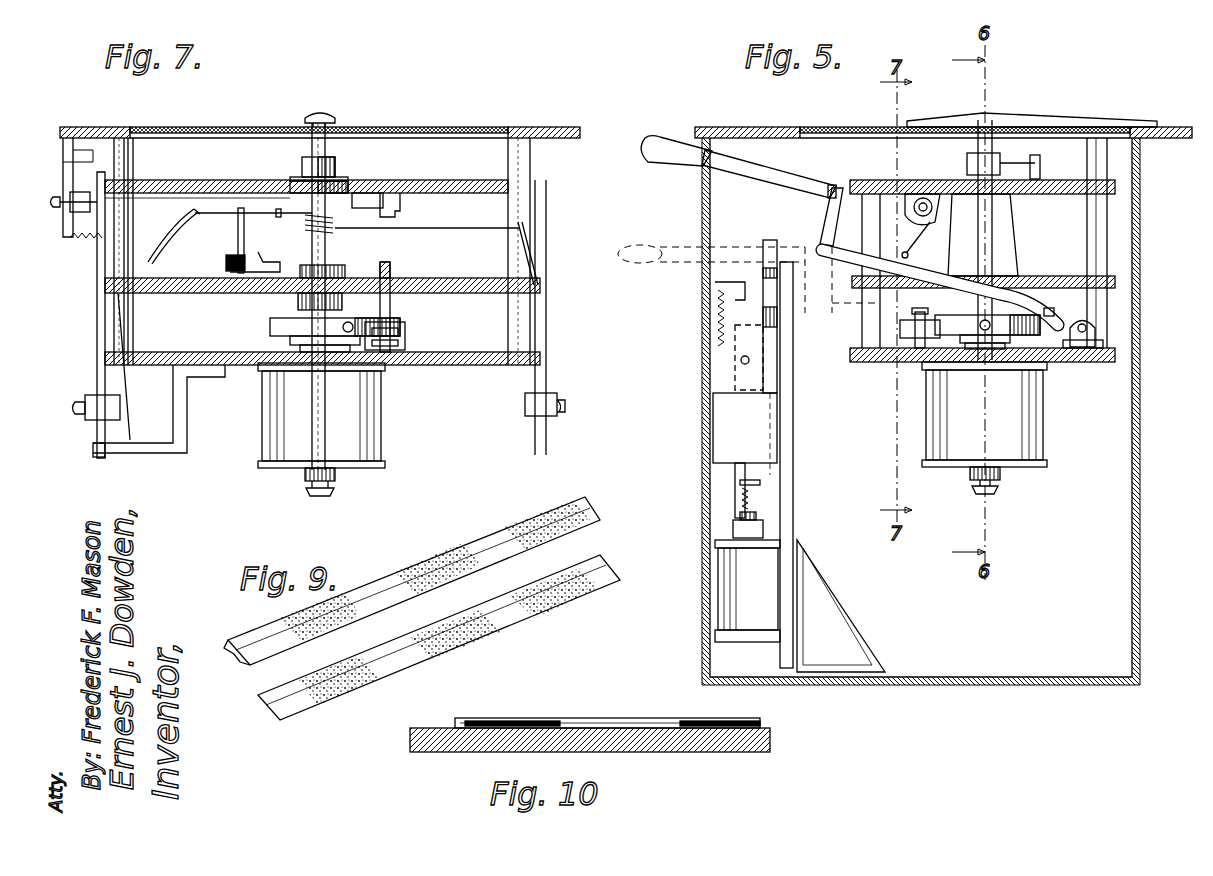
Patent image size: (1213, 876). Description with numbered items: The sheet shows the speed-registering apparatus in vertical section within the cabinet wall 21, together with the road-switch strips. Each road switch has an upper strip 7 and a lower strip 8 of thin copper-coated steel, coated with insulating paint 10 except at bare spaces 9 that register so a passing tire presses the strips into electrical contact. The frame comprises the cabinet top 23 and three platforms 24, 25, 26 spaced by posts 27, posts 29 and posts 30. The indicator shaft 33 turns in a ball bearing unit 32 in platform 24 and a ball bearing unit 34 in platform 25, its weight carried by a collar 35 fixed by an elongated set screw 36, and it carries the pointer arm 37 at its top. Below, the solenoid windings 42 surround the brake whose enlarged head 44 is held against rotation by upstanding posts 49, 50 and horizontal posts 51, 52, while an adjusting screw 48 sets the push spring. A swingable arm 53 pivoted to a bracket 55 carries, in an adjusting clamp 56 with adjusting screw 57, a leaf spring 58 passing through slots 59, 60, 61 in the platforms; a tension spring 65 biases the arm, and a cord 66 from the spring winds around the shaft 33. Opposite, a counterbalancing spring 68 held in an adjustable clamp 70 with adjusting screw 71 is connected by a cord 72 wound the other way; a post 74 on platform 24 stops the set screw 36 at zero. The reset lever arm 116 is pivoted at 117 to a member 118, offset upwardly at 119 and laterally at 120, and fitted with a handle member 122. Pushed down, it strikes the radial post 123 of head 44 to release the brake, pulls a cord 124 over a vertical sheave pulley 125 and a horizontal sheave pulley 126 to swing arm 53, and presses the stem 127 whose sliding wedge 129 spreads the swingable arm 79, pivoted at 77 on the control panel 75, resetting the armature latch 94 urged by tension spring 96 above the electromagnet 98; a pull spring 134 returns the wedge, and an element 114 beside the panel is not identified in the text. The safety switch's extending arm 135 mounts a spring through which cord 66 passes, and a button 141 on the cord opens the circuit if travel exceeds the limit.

In FIG. 9, the upper strip 7 is at (262, 640).
In FIG. 10, the upper strip 7 is at (555, 718).
In FIG. 9, the lower strip 8 is at (345, 695).
In FIG. 10, the lower strip 8 is at (635, 728).
In FIG. 9, the bare spaces 9 is at (470, 548).
In FIG. 10, the bare spaces 9 is at (622, 718).
In FIG. 10, the insulating paint 10 is at (483, 718).
In FIG. 5, the casing 21 is at (702, 408).
In FIG. 5, the top 23 is at (733, 127).
In FIG. 5, the platform 24 is at (1115, 188).
In FIG. 5, the platform 25 is at (1115, 283).
In FIG. 5, the platform 26 is at (1115, 356).
In FIG. 5, the posts 27 is at (1107, 160).
In FIG. 5, the posts 29 is at (1107, 233).
In FIG. 5, the posts 30 is at (1097, 337).
In FIG. 7, the ball bearing unit 32 is at (297, 185).
In FIG. 7, the indicator shaft 33 is at (326, 243).
In FIG. 5, the indicator shaft 33 is at (1000, 240).
In FIG. 7, the ball bearing unit 34 is at (330, 278).
In FIG. 7, the collar 35 is at (302, 163).
In FIG. 5, the set screw 36 is at (1001, 155).
In FIG. 5, the pointer arm 37 is at (1072, 118).
In FIG. 7, the windings 42 is at (383, 410).
In FIG. 5, the windings 42 is at (1043, 450).
In FIG. 7, the enlarged head 44 is at (270, 330).
In FIG. 5, the enlarged head 44 is at (940, 335).
In FIG. 5, the adjusting screw 48 is at (1000, 486).
In FIG. 5, the upstanding post 49 is at (1055, 352).
In FIG. 5, the upstanding post 50 is at (905, 350).
In FIG. 5, the horizontal post 51 is at (1015, 345).
In FIG. 7, the horizontal post 52 is at (352, 319).
In FIG. 5, the horizontal post 52 is at (935, 318).
In FIG. 7, the swingable arm 53 is at (105, 312).
In FIG. 7, the bracket 55 is at (180, 405).
In FIG. 7, the adjusting clamp 56 is at (95, 404).
In FIG. 7, the adjusting screw 57 is at (80, 398).
In FIG. 7, the leaf spring 58 is at (140, 304).
In FIG. 7, the slot 59 is at (160, 180).
In FIG. 7, the slot 60 is at (165, 278).
In FIG. 7, the slot 61 is at (158, 366).
In FIG. 7, the tension spring 65 is at (77, 233).
In FIG. 7, the cord 66 is at (176, 236).
In FIG. 7, the counterbalancing spring 68 is at (540, 240).
In FIG. 7, the adjustable clamp 70 is at (548, 400).
In FIG. 7, the adjusting screw 71 is at (568, 405).
In FIG. 7, the cord 72 is at (482, 241).
In FIG. 5, the post 74 is at (1040, 160).
In FIG. 5, the control panel 75 is at (793, 346).
In FIG. 5, the pivot 77 is at (715, 303).
In FIG. 5, the swingable arm 79 is at (735, 478).
In FIG. 5, the armature latch 94 is at (763, 527).
In FIG. 5, the tension spring 96 is at (738, 510).
In FIG. 5, the electromagnet 98 is at (725, 582).
In FIG. 5, the slide rod 114 is at (777, 432).
In FIG. 7, the lever arm 116 is at (390, 267).
In FIG. 5, the lever arm 116 is at (822, 225).
In FIG. 5, the pivot 117 is at (1097, 330).
In FIG. 5, the member 118 is at (1092, 352).
In FIG. 5, the upward offset 119 is at (826, 205).
In FIG. 5, the lateral offset 120 is at (838, 186).
In FIG. 5, the handle member 122 is at (662, 138).
In FIG. 7, the radial post 123 is at (405, 324).
In FIG. 5, the radial post 123 is at (935, 345).
In FIG. 7, the cord 124 is at (237, 180).
In FIG. 5, the cord 124 is at (928, 240).
In FIG. 7, the vertical sheave pulley 125 is at (400, 215).
In FIG. 5, the vertical sheave pulley 125 is at (936, 221).
In FIG. 7, the horizontal sheave pulley 126 is at (372, 193).
In FIG. 5, the horizontal sheave pulley 126 is at (940, 194).
In FIG. 5, the stem 127 is at (770, 240).
In FIG. 5, the sliding wedge 129 is at (735, 340).
In FIG. 7, the pull spring 134 is at (300, 235).
In FIG. 5, the pull spring 134 is at (715, 320).
In FIG. 7, the extending arm 135 is at (274, 250).
In FIG. 7, the button 141 is at (268, 242).